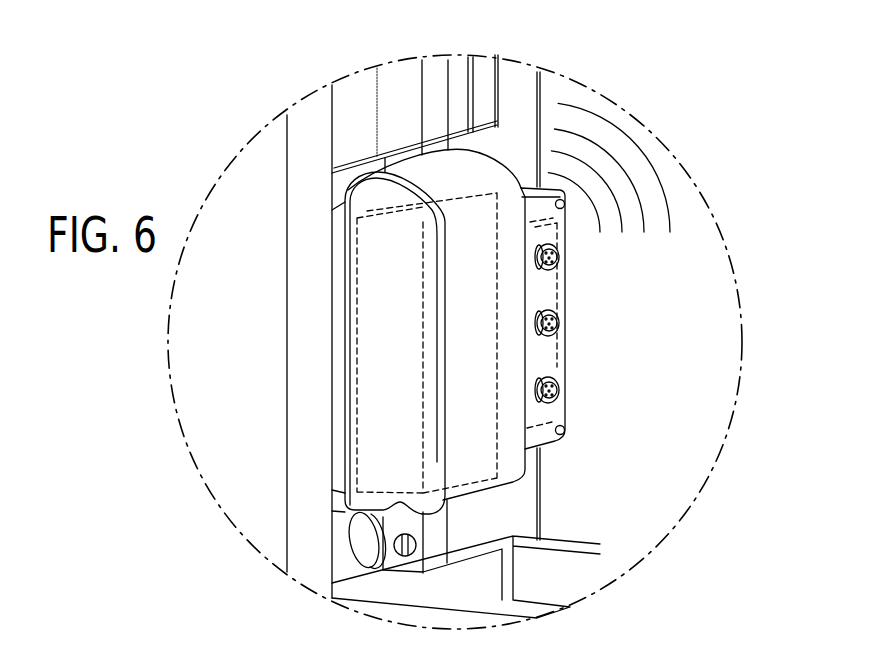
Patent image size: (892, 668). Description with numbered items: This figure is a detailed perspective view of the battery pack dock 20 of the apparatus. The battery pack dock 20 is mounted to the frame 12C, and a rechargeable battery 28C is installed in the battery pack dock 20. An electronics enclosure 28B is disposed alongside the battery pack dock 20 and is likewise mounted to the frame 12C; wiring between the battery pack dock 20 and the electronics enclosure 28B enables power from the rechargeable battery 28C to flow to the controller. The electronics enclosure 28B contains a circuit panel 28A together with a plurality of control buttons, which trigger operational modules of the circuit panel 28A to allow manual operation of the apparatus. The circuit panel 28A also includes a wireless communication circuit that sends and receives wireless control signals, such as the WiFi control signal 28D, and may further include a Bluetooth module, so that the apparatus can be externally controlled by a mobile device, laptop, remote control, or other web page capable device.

The frame 12C is at (307, 292).
The battery pack dock 20 is at (483, 453).
The circuit panel 28A is at (543, 297).
The electronics enclosure 28B is at (565, 363).
The rechargeable battery 28C is at (387, 333).
The WiFi control signal 28D is at (635, 145).